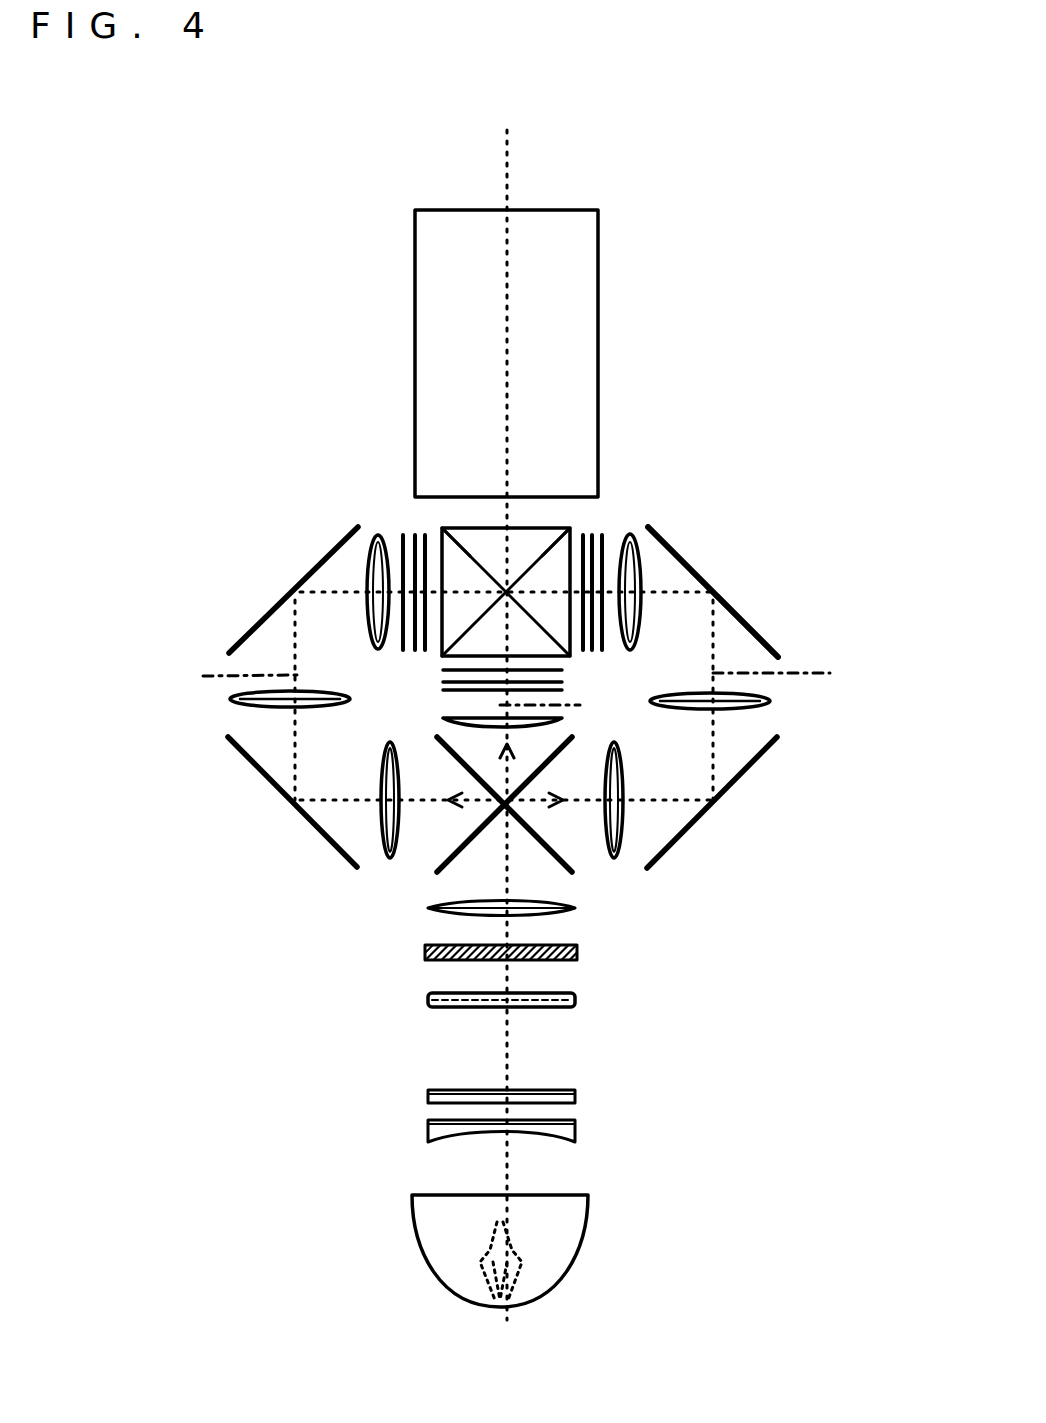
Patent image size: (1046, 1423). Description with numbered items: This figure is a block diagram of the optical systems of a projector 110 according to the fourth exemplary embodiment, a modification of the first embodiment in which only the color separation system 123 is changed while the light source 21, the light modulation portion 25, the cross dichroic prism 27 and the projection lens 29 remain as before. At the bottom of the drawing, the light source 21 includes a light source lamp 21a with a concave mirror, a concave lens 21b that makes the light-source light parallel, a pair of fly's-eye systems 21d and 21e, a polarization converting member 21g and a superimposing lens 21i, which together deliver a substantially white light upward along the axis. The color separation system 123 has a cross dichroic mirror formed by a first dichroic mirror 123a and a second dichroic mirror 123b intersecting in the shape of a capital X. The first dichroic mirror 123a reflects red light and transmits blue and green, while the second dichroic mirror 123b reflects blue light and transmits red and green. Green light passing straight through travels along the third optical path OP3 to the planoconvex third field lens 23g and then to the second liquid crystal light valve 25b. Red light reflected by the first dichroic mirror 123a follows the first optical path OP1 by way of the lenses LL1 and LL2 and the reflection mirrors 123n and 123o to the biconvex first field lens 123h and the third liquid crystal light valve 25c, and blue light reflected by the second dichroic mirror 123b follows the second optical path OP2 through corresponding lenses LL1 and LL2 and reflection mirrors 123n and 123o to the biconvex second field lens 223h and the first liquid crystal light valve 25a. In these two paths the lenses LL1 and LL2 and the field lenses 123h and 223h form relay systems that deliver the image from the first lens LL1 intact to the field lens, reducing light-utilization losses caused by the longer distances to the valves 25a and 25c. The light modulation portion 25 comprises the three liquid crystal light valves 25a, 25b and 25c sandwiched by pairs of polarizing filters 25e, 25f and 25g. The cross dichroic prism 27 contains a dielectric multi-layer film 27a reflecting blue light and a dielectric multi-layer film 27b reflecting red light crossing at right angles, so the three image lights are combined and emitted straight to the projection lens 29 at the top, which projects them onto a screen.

The projector 110 is at (921, 143).
The projection lens 29 is at (574, 313).
The cross dichroic prism 27 is at (468, 515).
The dielectric multi-layer film 27a is at (443, 527).
The dielectric multi-layer film 27b is at (560, 527).
The light modulation portion 25 is at (610, 534).
The first liquid crystal light valve 25a is at (642, 610).
The second liquid crystal light valve 25b is at (565, 680).
The third liquid crystal light valve 25c is at (407, 583).
The polarizing filter 25e is at (592, 650).
The polarizing filter 25f is at (443, 690).
The polarizing filter 25g is at (410, 652).
The second field lens 223h is at (367, 617).
The first field lens 123h is at (640, 583).
The reflection mirror 123o is at (250, 631).
The reflection mirror 123n is at (253, 770).
The first dichroic mirror 123a is at (430, 877).
The second dichroic mirror 123b is at (568, 875).
The color separation system 123 is at (272, 818).
The third field lens 23g is at (585, 800).
The first lens LL1 is at (393, 858).
The second lens LL2 is at (232, 700).
The first optical path OP1 is at (809, 689).
The second optical path OP2 is at (215, 680).
The third optical path OP3 is at (572, 723).
The light source 21 is at (606, 1043).
The light source lamp 21a is at (440, 1248).
The concave lens 21b is at (432, 1138).
The fly's-eye system 21d is at (428, 1099).
The fly's-eye system 21e is at (428, 1005).
The polarization converting member 21g is at (428, 955).
The superimposing lens 21i is at (428, 910).